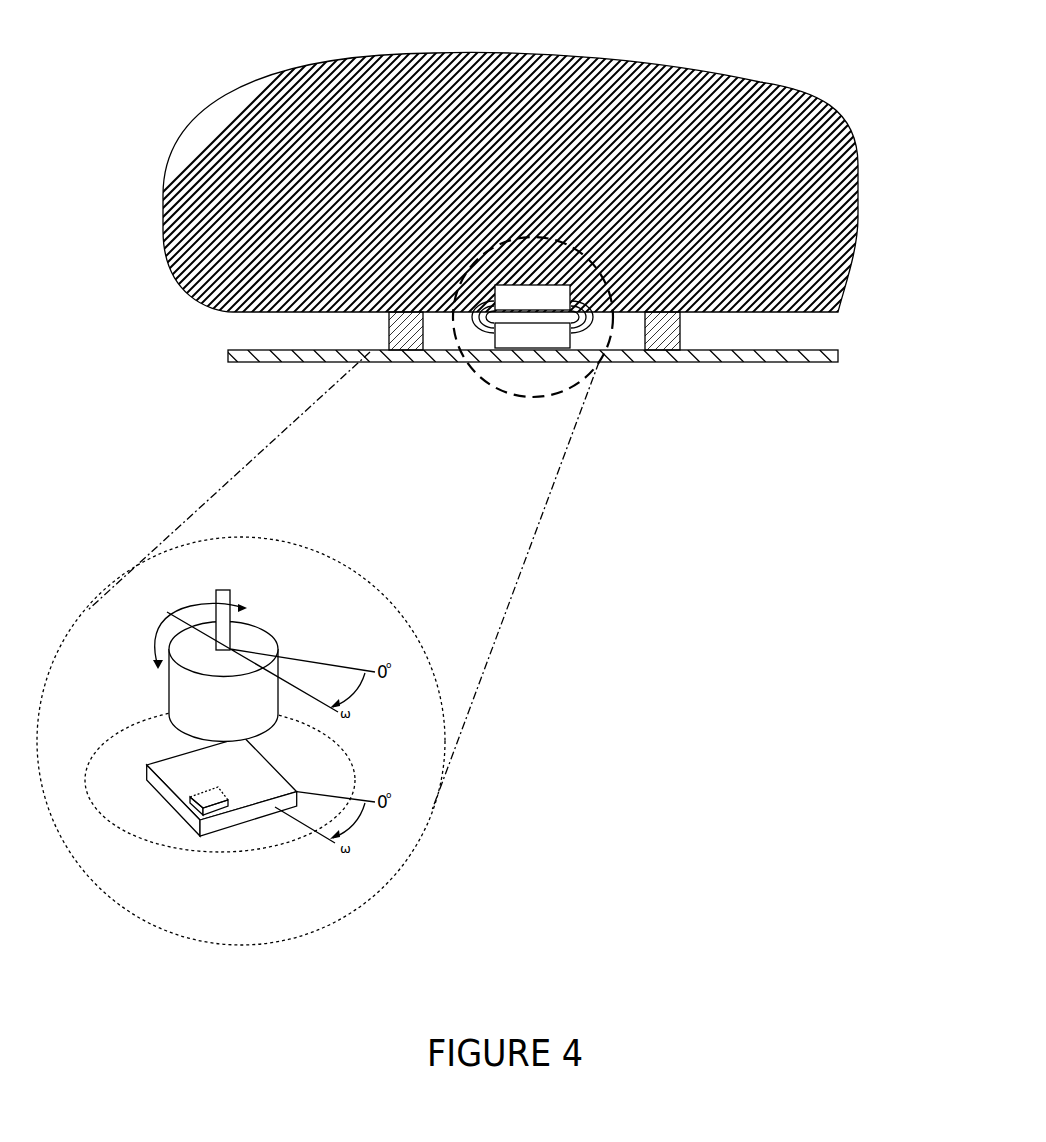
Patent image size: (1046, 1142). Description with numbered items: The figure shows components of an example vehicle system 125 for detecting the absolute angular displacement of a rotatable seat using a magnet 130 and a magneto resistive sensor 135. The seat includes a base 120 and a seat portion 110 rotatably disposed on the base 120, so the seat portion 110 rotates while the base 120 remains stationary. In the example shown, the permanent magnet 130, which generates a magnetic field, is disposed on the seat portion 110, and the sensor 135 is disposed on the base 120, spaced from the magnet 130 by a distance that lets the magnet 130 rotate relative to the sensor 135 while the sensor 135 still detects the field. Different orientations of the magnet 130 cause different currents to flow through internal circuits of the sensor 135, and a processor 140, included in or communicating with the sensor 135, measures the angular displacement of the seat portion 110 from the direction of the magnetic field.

The seat portion 110 is at (607, 52).
The base 120 is at (749, 362).
The vehicle system 125 is at (387, 635).
The magnet 130 is at (495, 296).
The magneto resistive sensor 135 is at (495, 343).
The processor 140 is at (218, 810).